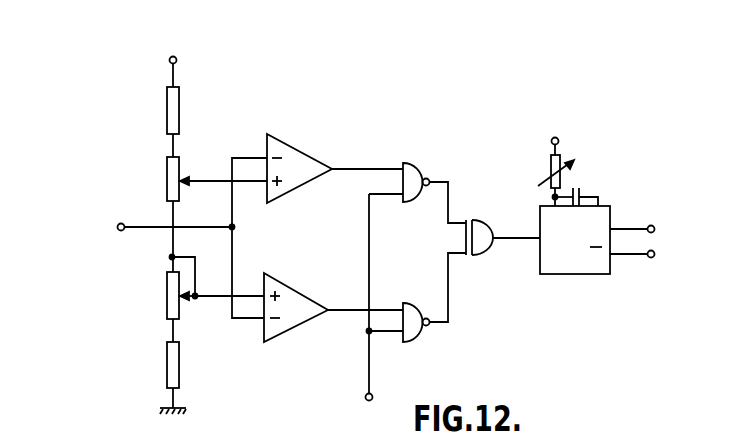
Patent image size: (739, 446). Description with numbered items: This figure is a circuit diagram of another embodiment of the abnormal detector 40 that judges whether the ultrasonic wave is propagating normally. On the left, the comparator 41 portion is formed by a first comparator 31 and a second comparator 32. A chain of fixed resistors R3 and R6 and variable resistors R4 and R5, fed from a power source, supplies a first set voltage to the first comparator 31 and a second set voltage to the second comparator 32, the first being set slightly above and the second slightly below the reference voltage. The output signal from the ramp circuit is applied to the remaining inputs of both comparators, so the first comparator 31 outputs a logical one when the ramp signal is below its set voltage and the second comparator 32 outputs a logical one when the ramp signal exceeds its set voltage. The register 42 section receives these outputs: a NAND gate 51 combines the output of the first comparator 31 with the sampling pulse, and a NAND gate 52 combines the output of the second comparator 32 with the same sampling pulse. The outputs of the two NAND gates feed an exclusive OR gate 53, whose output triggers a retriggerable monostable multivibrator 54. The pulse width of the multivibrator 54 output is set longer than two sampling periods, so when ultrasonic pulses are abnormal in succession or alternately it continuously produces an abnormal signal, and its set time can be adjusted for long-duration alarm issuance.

The first comparator 31 is at (305, 147).
The second comparator 32 is at (295, 285).
The abnormal detector 40 is at (427, 83).
The comparator 41 is at (275, 424).
The register 42 is at (583, 403).
The NAND gate 51 is at (417, 163).
The NAND gate 52 is at (418, 340).
The exclusive OR gate 53 is at (491, 254).
The retriggerable monostable multivibrator 54 is at (575, 274).
The fixed resistor R3 is at (167, 102).
The variable resistor R4 is at (167, 181).
The variable resistor R5 is at (164, 295).
The fixed resistor R6 is at (166, 368).